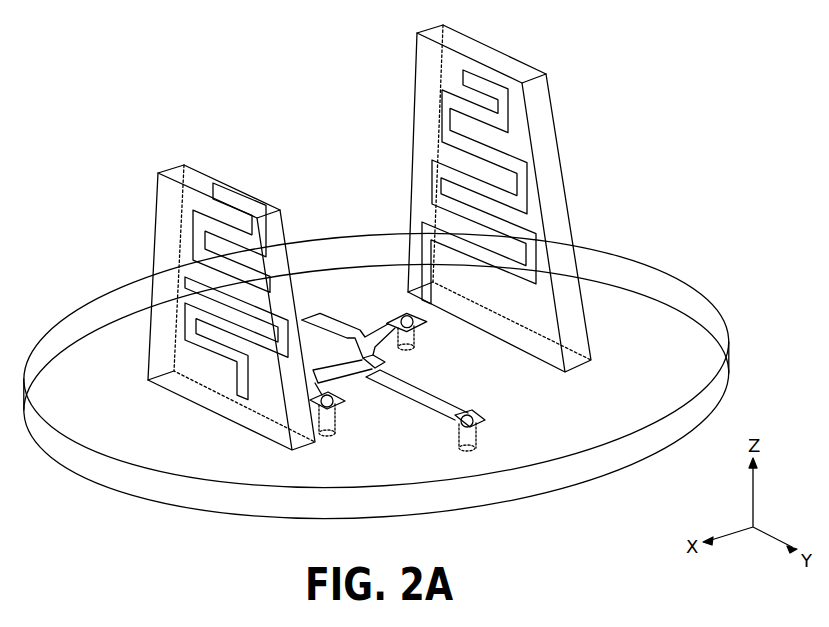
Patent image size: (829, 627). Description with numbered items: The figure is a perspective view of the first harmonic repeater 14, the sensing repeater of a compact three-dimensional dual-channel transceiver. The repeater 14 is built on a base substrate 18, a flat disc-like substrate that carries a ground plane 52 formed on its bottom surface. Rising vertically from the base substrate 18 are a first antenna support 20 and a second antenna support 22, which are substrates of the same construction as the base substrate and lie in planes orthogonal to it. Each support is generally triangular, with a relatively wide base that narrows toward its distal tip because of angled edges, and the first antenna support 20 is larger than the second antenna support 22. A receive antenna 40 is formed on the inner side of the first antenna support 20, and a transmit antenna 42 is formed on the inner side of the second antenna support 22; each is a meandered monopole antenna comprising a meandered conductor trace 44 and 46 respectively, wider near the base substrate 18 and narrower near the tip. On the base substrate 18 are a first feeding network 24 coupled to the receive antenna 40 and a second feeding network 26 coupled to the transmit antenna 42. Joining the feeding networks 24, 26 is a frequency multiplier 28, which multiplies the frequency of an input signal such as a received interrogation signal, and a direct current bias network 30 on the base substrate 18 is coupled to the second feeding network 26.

The first harmonic repeater 14 is at (717, 101).
The base substrate 18 is at (682, 298).
The first antenna support 20 is at (410, 59).
The second antenna support 22 is at (147, 160).
The first feeding network 24 is at (365, 311).
The second feeding network 26 is at (365, 410).
The frequency multiplier 28 is at (387, 363).
The direct current (DC) bias network 30 is at (468, 396).
The receive antenna 40 is at (548, 224).
The transmit antenna 42 is at (210, 359).
The meandered conductor trace 44 is at (437, 160).
The meandered conductor trace 46 is at (202, 230).
The ground plane 52 is at (160, 507).